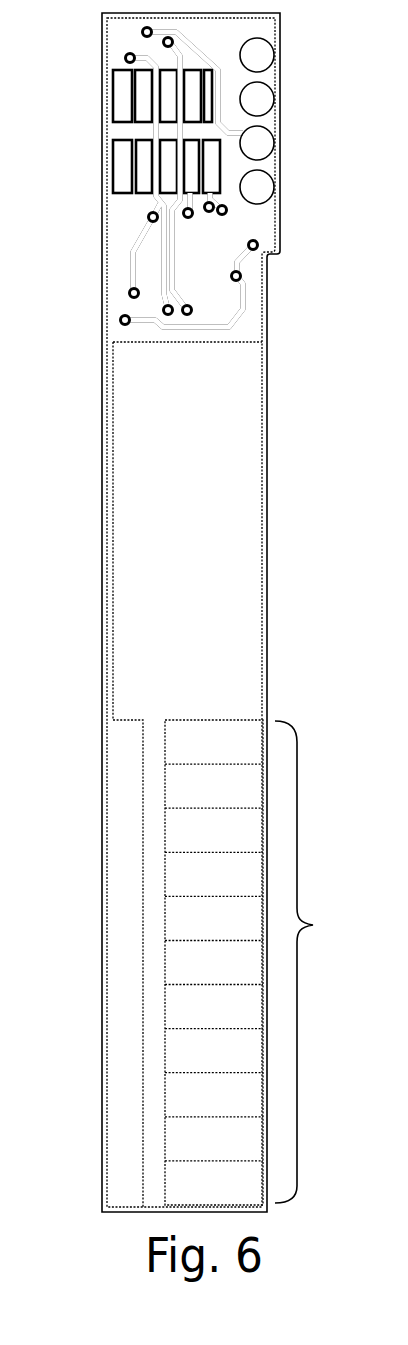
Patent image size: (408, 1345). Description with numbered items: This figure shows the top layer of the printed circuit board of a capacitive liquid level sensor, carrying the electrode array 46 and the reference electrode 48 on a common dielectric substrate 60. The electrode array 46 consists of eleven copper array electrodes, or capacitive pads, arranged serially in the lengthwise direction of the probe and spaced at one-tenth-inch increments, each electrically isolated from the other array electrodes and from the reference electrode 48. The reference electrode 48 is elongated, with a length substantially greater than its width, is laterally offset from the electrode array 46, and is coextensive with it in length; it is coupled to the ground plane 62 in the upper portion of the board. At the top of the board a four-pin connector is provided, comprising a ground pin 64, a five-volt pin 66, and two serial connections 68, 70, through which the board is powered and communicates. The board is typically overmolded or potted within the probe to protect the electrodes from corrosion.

The electrode array 46 is at (313, 925).
The reference electrode 48 is at (123, 925).
The dielectric substrate 60 is at (248, 615).
The ground plane 62 is at (118, 223).
The ground pin 64 is at (263, 187).
The 5V pin 66 is at (264, 147).
The serial connection 68 is at (262, 103).
The serial connection 70 is at (263, 57).